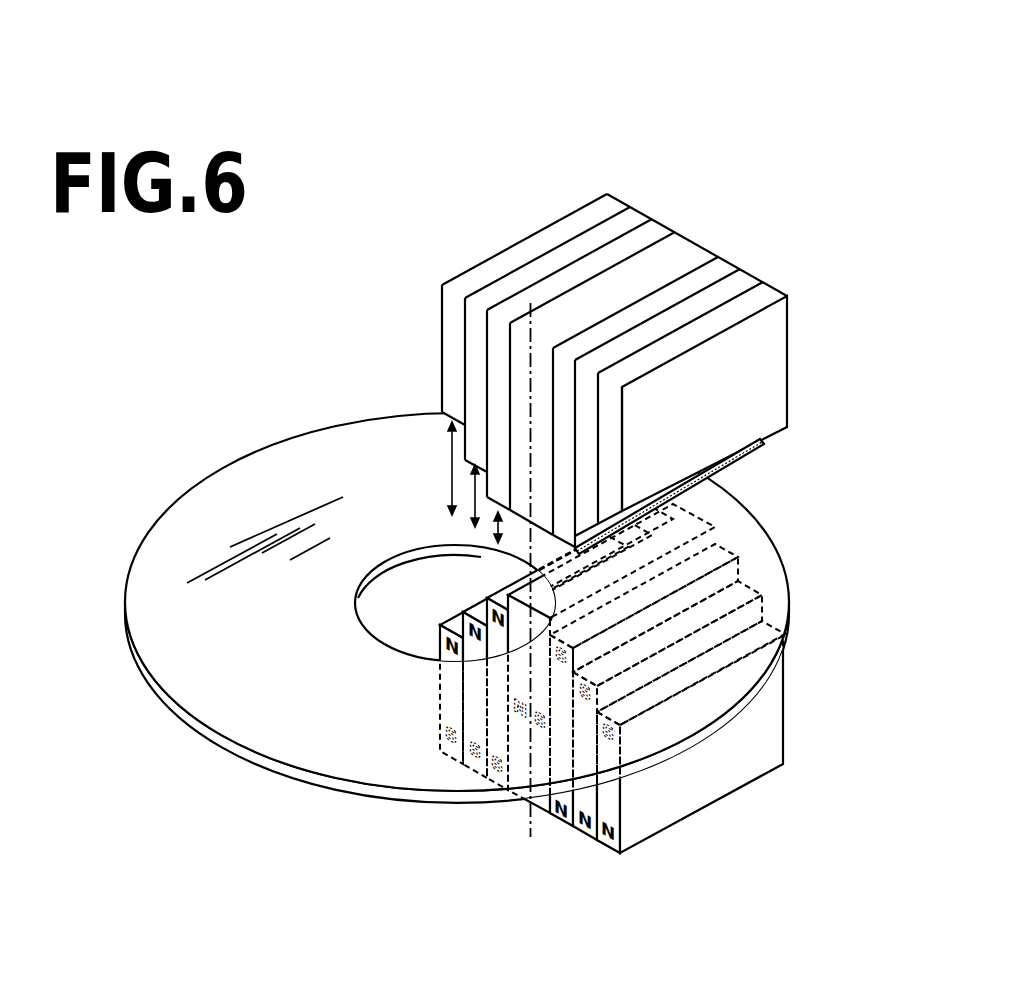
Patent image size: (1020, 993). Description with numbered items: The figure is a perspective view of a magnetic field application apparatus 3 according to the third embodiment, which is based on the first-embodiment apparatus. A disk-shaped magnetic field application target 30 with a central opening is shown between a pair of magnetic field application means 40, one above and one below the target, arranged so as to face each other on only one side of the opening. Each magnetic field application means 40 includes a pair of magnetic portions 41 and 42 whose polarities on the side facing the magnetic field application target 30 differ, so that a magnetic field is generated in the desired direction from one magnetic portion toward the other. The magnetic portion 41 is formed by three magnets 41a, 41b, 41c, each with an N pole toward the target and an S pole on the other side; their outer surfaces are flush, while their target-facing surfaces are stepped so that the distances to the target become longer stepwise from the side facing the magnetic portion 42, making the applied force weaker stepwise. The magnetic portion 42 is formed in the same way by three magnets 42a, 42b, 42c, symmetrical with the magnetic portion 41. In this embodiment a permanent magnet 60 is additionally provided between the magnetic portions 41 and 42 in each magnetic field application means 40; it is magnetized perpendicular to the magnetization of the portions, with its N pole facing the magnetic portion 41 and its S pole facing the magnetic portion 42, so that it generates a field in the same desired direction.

The magnetic field application apparatus 3 is at (815, 342).
The magnetic field application target 30 is at (260, 743).
The magnetic field application means 40 is at (658, 451).
The magnetic portion 41 is at (541, 274).
The magnet 41a is at (587, 258).
The magnet 41b is at (567, 253).
The magnet 41c is at (533, 245).
The magnetic portion 42 is at (686, 324).
The magnet 42a is at (668, 297).
The magnet 42b is at (687, 312).
The magnet 42c is at (707, 352).
The permanent magnet 60 is at (530, 305).